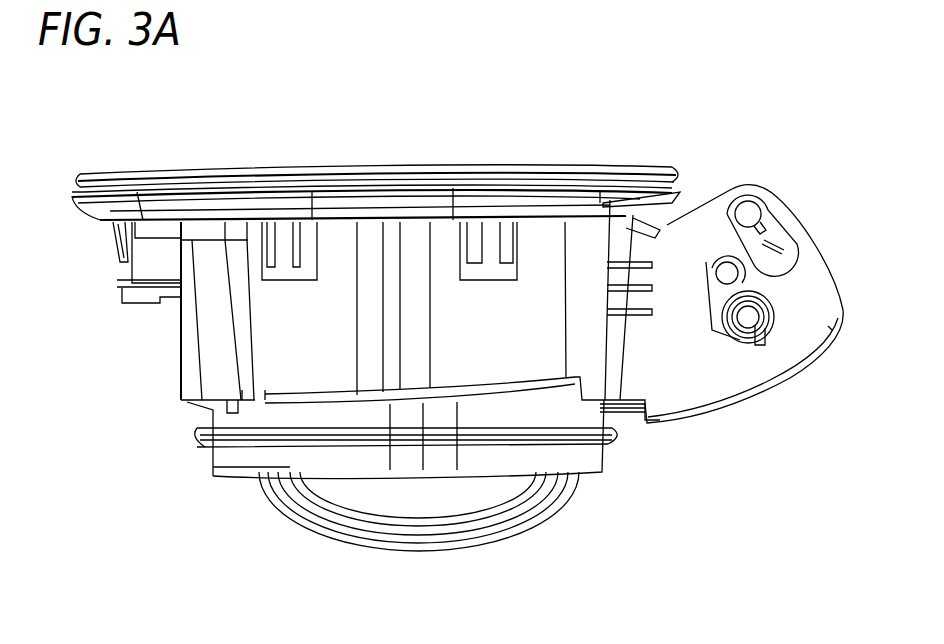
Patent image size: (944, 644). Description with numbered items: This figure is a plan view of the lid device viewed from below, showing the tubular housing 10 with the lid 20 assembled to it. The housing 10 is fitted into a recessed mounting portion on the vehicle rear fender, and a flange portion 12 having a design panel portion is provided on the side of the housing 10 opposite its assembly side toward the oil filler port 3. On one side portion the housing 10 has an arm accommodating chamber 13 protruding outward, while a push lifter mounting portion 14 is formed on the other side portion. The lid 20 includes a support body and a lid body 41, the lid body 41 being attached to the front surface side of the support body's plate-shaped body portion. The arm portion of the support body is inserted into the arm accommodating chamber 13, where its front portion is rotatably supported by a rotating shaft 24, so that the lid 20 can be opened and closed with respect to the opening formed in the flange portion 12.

The oil filler port 3 is at (406, 500).
The housing 10 is at (180, 343).
The flange portion 12 is at (72, 192).
The arm accommodating chamber 13 is at (830, 357).
The push lifter mounting portion 14 is at (117, 257).
The lid 20 is at (376, 140).
The rotating shaft 24 is at (750, 212).
The lid body 41 is at (509, 166).